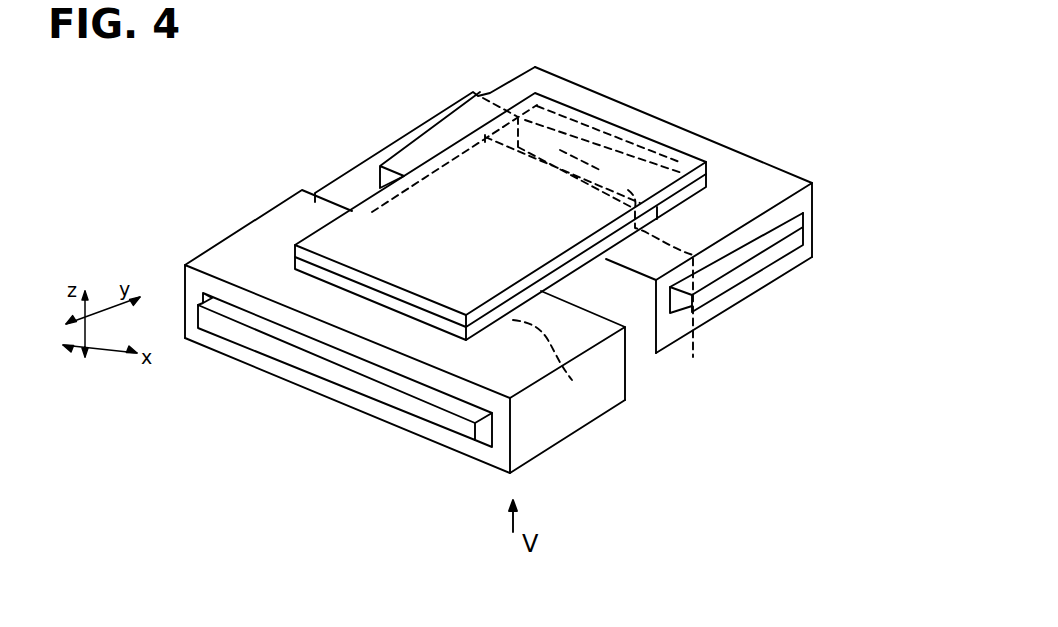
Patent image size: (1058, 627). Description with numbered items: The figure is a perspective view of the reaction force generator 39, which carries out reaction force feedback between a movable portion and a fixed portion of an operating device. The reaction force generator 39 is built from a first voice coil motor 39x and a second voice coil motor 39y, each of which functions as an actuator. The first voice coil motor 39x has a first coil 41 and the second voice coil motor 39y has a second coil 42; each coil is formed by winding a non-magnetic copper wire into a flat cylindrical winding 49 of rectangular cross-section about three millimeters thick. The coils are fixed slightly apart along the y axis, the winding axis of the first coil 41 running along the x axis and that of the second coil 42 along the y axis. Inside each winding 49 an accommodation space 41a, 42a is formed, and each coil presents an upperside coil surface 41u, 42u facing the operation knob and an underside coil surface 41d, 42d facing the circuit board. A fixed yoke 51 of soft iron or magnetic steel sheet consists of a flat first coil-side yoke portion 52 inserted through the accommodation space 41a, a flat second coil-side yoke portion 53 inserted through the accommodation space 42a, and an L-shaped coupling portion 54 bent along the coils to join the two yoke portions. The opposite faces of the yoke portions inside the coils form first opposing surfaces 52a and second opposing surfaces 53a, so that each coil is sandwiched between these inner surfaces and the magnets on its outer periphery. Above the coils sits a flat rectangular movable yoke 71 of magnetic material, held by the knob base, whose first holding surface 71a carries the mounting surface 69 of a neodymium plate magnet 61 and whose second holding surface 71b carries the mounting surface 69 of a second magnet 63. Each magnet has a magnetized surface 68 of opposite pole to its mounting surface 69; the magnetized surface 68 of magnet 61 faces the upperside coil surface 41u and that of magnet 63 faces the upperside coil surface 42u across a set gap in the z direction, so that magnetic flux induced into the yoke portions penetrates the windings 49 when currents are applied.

The reaction force generator 39 is at (355, 116).
The first voice coil motor 39x is at (706, 120).
The second voice coil motor 39y is at (296, 402).
The first coil 41 is at (777, 163).
The second coil 42 is at (302, 215).
The winding 49 is at (606, 203).
The upperside coil surface 41u is at (727, 156).
The accommodation space 41a is at (803, 213).
The underside coil surface 41d is at (788, 274).
The upperside coil surface 42u is at (217, 260).
The accommodation space 42a is at (197, 288).
The underside coil surface 42d is at (548, 447).
The fixed yoke 51 is at (218, 327).
The first coil-side yoke portion 52 is at (797, 242).
The first opposing surfaces 52a is at (745, 257).
The second coil-side yoke portion 53 is at (475, 440).
The second opposing surfaces 53a is at (422, 395).
The coupling portion 54 is at (424, 129).
The magnet 61 is at (690, 213).
The magnet 63 is at (325, 270).
The magnetized surface 68 is at (684, 204).
The mounting surface 69 is at (483, 98).
The movable yoke 71 is at (542, 130).
The first holding surface 71a is at (679, 296).
The second holding surface 71b is at (572, 380).